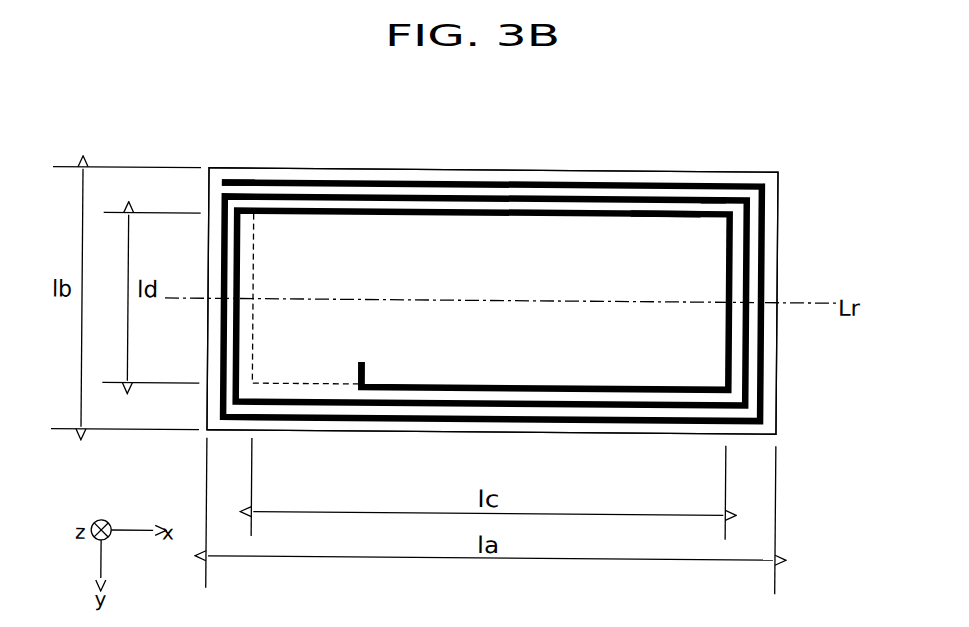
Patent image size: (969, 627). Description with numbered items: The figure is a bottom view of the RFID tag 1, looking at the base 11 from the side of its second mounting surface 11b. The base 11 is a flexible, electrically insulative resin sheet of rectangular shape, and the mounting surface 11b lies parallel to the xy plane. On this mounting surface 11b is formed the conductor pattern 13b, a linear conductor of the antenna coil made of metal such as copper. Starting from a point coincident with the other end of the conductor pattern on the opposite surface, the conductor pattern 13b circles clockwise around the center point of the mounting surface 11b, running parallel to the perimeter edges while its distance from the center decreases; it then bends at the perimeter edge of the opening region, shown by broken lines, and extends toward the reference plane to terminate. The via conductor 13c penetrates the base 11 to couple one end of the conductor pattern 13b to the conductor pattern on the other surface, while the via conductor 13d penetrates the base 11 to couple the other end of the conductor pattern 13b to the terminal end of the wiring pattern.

The RFID tag 1 is at (192, 127).
The base 11 is at (793, 190).
The mounting surface 11b is at (660, 226).
The conductor pattern 13b is at (332, 176).
The via conductor 13c is at (226, 176).
The via conductor 13d is at (364, 359).